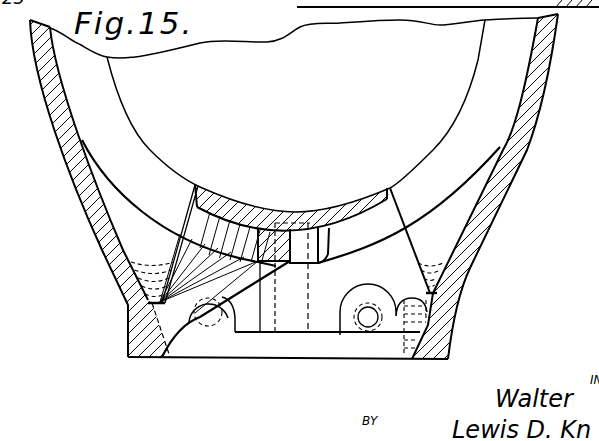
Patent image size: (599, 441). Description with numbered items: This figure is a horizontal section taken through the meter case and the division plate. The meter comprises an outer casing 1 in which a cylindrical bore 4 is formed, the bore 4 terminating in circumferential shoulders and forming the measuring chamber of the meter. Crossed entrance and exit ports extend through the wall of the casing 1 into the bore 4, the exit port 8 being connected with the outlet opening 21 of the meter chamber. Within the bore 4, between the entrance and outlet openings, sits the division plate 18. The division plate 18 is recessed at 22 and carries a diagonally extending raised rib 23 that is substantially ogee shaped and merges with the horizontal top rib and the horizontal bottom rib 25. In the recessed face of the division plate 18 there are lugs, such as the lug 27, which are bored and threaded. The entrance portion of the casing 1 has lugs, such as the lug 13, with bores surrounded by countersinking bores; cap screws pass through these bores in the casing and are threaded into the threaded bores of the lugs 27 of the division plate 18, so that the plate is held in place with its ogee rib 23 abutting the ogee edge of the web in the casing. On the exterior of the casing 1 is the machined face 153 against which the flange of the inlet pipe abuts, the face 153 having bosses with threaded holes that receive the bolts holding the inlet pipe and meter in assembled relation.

The outer casing 1 is at (552, 85).
The cylindrical bore 4 is at (529, 62).
The exit port 8 is at (416, 240).
The lug 13 is at (283, 298).
The division plate 18 is at (333, 207).
The outlet opening 21 is at (440, 235).
The recess 22 is at (357, 228).
The raised rib 23 is at (230, 230).
The bottom rib 25 is at (311, 228).
The lug 27 is at (312, 247).
The machined face 153 is at (163, 357).